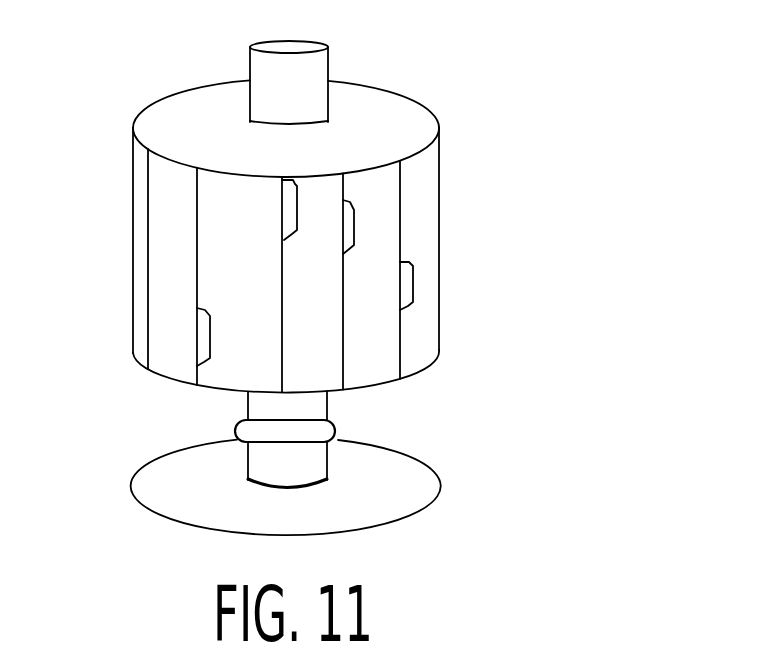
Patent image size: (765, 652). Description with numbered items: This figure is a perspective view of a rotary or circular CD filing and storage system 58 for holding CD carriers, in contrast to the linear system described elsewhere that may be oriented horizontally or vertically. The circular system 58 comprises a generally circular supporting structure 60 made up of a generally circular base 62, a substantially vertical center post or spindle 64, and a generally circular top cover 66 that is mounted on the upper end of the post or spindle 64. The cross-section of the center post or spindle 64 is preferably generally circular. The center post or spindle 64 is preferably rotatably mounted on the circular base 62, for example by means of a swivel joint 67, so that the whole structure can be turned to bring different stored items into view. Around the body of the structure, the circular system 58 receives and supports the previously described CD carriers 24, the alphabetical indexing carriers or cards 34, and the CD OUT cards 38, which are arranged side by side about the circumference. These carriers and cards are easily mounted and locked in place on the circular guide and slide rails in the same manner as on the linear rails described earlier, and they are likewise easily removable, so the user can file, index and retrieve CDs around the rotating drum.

The circular system 58 is at (140, 102).
The circular supporting structure 60 is at (391, 91).
The circular top cover 66 is at (441, 118).
The CD carrier 24 is at (217, 282).
The alphabetical indexing carrier or card 34 is at (267, 257).
The CD OUT card 38 is at (417, 282).
The center post or spindle 64 is at (328, 63).
The swivel joint 67 is at (238, 436).
The circular base 62 is at (403, 470).